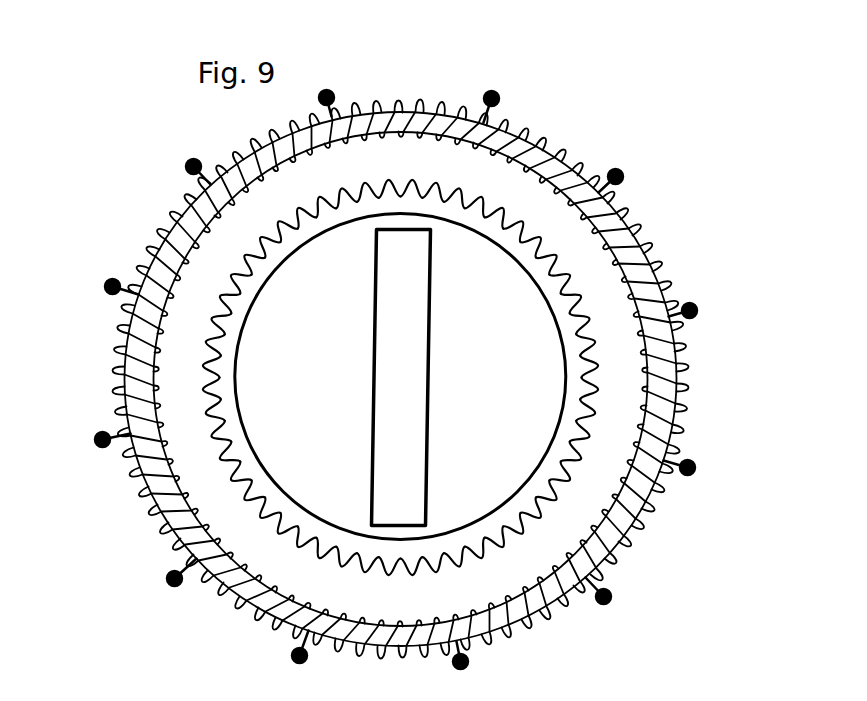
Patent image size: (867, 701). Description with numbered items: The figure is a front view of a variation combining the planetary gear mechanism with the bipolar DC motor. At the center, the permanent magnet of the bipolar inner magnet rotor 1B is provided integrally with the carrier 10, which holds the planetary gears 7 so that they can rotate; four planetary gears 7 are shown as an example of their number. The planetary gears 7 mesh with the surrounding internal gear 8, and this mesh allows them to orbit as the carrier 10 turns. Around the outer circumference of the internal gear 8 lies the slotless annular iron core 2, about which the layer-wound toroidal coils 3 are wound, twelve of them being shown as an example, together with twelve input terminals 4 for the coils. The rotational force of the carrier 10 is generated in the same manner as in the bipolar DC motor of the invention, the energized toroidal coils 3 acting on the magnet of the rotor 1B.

The slotless annular iron core 2 is at (190, 215).
The layer-wound toroidal coil 3 is at (268, 128).
The input terminal 4 is at (499, 97).
The planetary gear 7 is at (515, 240).
The internal gear 8 is at (186, 347).
The carrier 10 is at (300, 422).
The bipolar inner magnet rotor 1B is at (405, 345).